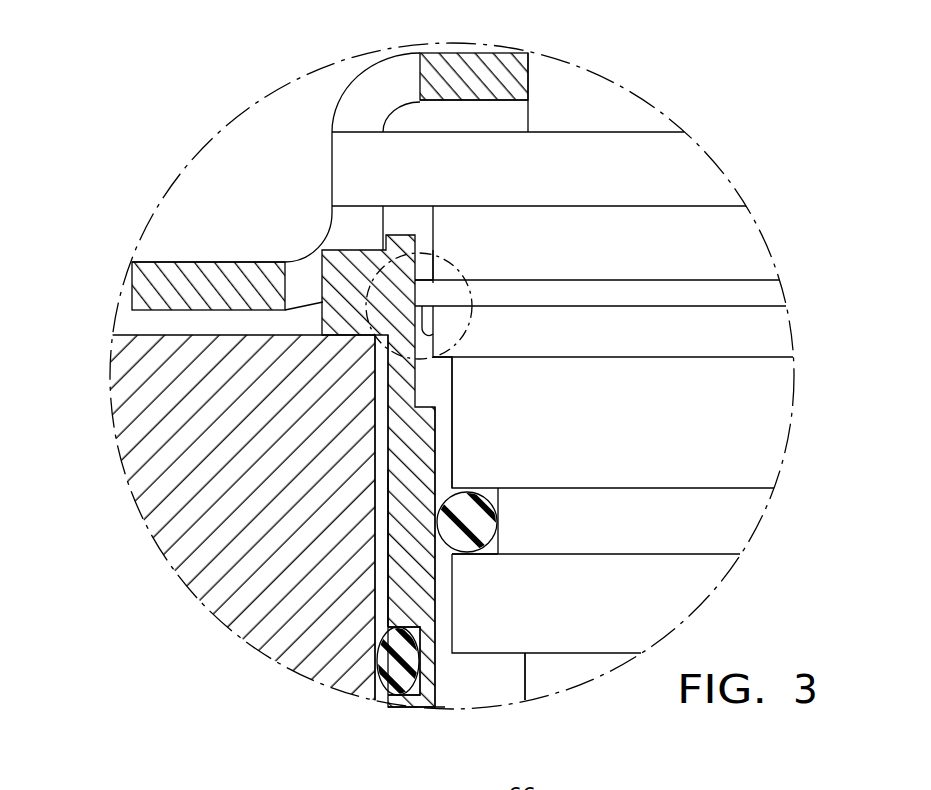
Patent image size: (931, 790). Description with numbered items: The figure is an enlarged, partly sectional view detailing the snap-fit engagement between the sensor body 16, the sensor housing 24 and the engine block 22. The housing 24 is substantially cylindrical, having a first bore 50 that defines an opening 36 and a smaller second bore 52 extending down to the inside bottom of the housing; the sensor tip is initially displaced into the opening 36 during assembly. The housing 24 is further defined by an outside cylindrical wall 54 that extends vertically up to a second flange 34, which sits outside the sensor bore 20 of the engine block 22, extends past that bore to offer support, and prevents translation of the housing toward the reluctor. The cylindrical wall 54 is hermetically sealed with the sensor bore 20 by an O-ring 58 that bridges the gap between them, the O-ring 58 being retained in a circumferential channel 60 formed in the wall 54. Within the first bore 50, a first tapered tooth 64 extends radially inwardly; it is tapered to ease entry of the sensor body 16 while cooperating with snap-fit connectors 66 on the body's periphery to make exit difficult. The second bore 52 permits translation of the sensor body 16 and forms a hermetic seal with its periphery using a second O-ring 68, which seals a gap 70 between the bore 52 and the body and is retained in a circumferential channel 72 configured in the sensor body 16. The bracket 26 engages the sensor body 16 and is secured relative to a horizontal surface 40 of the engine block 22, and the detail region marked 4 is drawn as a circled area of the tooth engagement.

The sensor body 16 is at (668, 165).
The opening 36 is at (435, 230).
The second flange 34 is at (330, 247).
The sensor probe component bracket 26 is at (168, 262).
The horizontal surface 40 is at (145, 335).
The sensor bore 20 is at (375, 358).
The engine block 22 is at (118, 412).
The sensor housing 24 is at (398, 517).
The outside cylindrical wall 54 is at (388, 570).
The O-ring 58 is at (393, 650).
The circumferential channel 60 is at (398, 700).
The second bore 52 is at (445, 707).
The gap 70 is at (447, 633).
The circumferential channel 72 is at (483, 556).
The second O-ring 68 is at (495, 512).
The first bore 50 is at (415, 385).
The first tapered tooth 64 is at (418, 306).
The snap-fit connectors 66 is at (423, 333).
The detail circle FIG. 4 is at (466, 356).